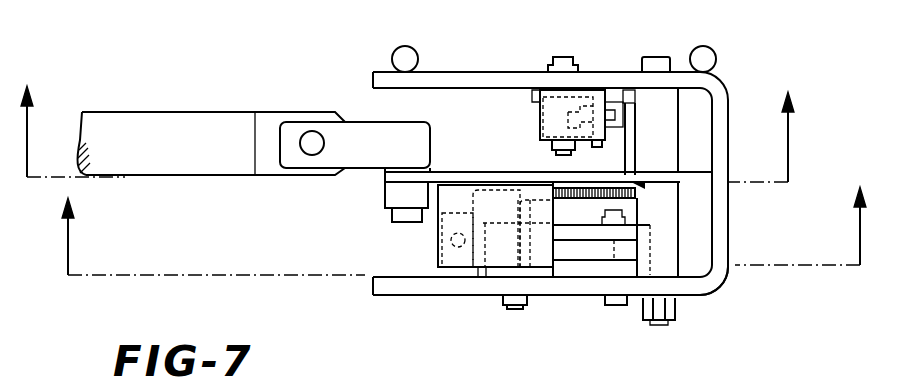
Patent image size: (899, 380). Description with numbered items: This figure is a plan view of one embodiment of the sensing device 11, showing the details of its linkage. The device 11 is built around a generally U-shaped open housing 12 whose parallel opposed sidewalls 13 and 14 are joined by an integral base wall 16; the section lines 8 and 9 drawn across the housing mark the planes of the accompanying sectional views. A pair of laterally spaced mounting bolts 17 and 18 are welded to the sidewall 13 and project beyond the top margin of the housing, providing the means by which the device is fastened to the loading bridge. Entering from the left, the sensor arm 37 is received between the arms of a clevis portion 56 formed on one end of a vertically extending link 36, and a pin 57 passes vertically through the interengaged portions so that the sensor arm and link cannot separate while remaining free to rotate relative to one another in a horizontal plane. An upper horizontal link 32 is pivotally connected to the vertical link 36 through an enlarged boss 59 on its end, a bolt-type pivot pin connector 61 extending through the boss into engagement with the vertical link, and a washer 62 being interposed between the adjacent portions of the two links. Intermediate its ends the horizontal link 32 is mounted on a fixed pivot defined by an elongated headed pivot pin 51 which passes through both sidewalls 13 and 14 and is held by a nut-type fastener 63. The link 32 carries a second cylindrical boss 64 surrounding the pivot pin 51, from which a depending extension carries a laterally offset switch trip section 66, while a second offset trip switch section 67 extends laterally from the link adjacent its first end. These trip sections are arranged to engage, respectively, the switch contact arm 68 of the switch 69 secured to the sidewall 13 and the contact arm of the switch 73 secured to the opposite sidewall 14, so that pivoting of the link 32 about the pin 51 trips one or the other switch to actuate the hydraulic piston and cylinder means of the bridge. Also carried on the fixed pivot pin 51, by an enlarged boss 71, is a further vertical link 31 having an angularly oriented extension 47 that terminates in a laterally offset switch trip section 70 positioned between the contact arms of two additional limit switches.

The section line 8- 8 is at (464, 231).
The section line 9- 9 is at (407, 123).
The sensing device 11 is at (745, 283).
The U-shaped open housing 12 is at (722, 281).
The sidewall 13 is at (463, 73).
The sidewall 14 is at (456, 285).
The base wall 16 is at (723, 207).
The mounting bolt 17 is at (408, 52).
The mounting bolt 18 is at (708, 50).
The vertical link 31 is at (686, 197).
The upper horizontal link 32 is at (472, 175).
The vertical link 36 is at (383, 163).
The sensor arm 37 is at (212, 110).
The angularly oriented extension 47 is at (598, 198).
The headed pivot pin 51 is at (657, 322).
The clevis portion 56 is at (295, 163).
The pin 57 is at (310, 137).
The enlarged boss 59 is at (385, 207).
The bolt-type pivot pin connector 61 is at (403, 227).
The washer 62 is at (430, 170).
The nut-type fastener 63 is at (677, 307).
The second cylindrical boss 64 is at (672, 137).
The switch trip section 66 is at (628, 100).
The second offset trip switch section 67 is at (545, 262).
The switch contact arm 68 is at (620, 113).
The switch 69 is at (585, 92).
The switch trip section 70 is at (520, 267).
The enlarged boss 71 is at (660, 265).
The switch 73 is at (587, 270).